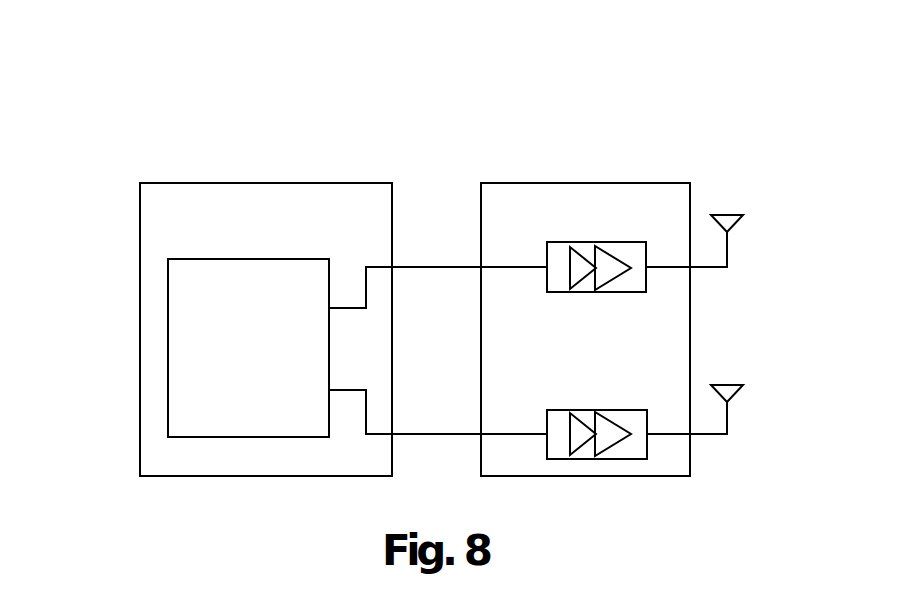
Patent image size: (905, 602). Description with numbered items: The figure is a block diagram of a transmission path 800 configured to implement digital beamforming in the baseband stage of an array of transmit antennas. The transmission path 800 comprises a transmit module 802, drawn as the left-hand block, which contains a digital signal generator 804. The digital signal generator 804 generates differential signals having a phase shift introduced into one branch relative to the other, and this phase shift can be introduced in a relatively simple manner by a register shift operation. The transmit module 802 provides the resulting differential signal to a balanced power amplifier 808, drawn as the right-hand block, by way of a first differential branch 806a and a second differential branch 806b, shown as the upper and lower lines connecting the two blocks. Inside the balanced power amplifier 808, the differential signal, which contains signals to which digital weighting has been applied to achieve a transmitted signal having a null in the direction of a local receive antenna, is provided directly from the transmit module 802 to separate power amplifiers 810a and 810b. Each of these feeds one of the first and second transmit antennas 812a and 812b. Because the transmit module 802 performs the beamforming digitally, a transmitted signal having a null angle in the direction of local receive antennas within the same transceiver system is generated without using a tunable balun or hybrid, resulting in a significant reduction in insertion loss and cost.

The transmission path 800 is at (90, 133).
The transmit module 802 is at (285, 241).
The digital signal generator 804 is at (270, 385).
The first differential branch 806a is at (403, 267).
The second differential branch 806b is at (403, 434).
The balanced power amplifier 808 is at (677, 226).
The first power amplifier 810a is at (568, 293).
The second power amplifier 810b is at (568, 410).
The first transmit antenna 812a is at (735, 215).
The second transmit antenna 812b is at (735, 385).